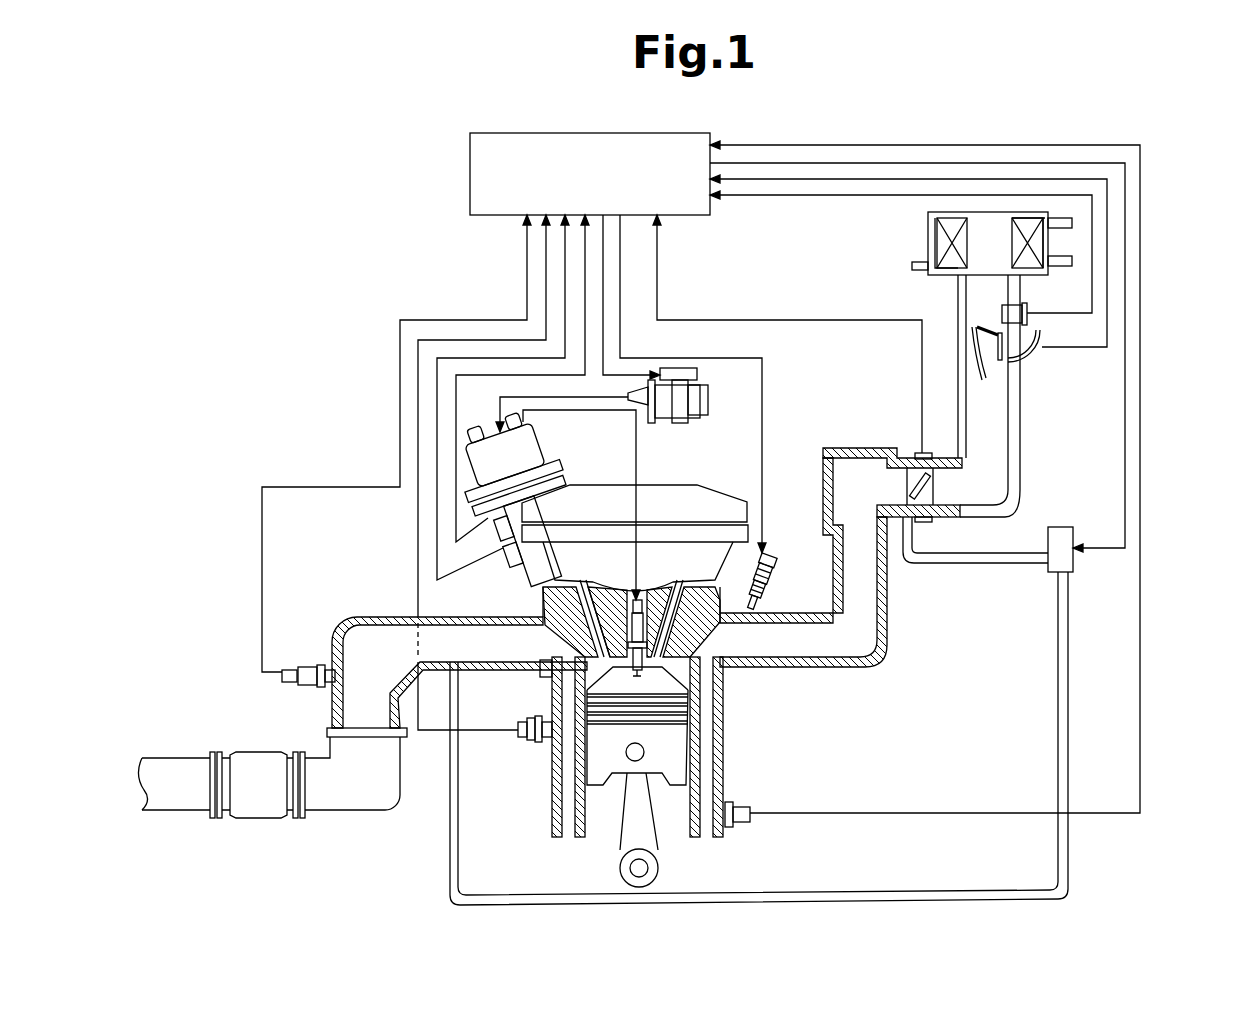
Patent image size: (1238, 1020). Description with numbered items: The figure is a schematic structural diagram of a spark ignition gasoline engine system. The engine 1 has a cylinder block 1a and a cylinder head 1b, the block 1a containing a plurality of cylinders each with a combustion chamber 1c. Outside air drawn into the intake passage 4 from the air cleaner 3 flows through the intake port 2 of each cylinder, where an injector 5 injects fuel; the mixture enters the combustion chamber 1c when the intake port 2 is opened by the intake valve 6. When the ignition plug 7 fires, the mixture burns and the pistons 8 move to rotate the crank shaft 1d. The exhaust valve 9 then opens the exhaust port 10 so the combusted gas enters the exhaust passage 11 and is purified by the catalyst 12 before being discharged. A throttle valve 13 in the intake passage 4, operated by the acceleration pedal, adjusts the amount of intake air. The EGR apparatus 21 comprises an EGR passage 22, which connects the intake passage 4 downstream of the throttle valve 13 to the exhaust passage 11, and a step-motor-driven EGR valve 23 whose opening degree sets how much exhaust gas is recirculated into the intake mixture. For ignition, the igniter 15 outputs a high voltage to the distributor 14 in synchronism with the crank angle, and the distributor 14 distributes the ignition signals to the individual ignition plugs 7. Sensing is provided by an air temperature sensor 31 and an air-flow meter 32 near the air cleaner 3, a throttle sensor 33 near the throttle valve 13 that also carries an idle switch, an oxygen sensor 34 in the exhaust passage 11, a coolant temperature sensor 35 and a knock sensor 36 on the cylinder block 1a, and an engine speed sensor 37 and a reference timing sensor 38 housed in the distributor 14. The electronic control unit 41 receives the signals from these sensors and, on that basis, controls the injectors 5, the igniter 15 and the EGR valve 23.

The engine 1 is at (638, 686).
The cylinder block 1a is at (723, 745).
The cylinder head 1b is at (728, 594).
The combustion chamber 1c is at (692, 712).
The crank shaft 1d is at (622, 870).
The intake port 2 is at (728, 663).
The air cleaner 3 is at (935, 237).
The intake passage 4 is at (870, 647).
The injector 5 is at (778, 580).
The intake valve 6 is at (680, 655).
The ignition plug 7 is at (644, 614).
The piston 8 is at (593, 763).
The exhaust valve 9 is at (592, 655).
The exhaust port 10 is at (548, 665).
The exhaust passage 11 is at (390, 630).
The catalyst 12 is at (245, 752).
The throttle valve 13 is at (932, 477).
The distributor 14 is at (547, 452).
The igniter 15 is at (698, 413).
The EGR apparatus 21 is at (1070, 850).
The EGR passage 22 is at (932, 895).
The EGR valve 23 is at (1060, 527).
The air temperature sensor 31 is at (1025, 310).
The air-flow meter 32 is at (1040, 342).
The throttle sensor 33 is at (915, 457).
The oxygen sensor 34 is at (302, 665).
The coolant temperature sensor 35 is at (518, 740).
The knock sensor 36 is at (742, 828).
The engine speed sensor 37 is at (490, 528).
The reference timing sensor 38 is at (507, 553).
The electronic control unit (ECU) 41 is at (470, 166).